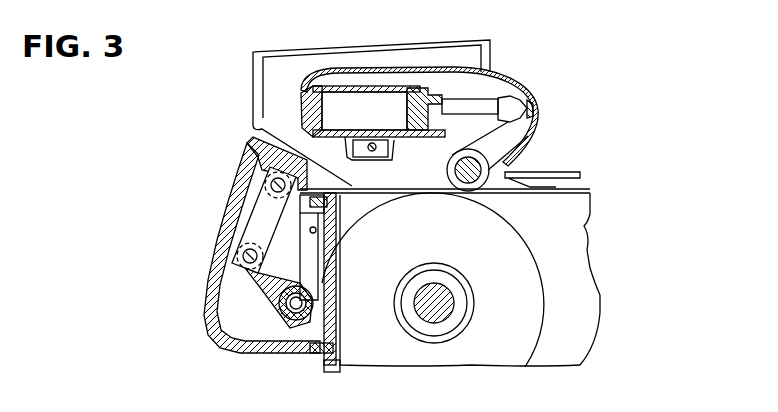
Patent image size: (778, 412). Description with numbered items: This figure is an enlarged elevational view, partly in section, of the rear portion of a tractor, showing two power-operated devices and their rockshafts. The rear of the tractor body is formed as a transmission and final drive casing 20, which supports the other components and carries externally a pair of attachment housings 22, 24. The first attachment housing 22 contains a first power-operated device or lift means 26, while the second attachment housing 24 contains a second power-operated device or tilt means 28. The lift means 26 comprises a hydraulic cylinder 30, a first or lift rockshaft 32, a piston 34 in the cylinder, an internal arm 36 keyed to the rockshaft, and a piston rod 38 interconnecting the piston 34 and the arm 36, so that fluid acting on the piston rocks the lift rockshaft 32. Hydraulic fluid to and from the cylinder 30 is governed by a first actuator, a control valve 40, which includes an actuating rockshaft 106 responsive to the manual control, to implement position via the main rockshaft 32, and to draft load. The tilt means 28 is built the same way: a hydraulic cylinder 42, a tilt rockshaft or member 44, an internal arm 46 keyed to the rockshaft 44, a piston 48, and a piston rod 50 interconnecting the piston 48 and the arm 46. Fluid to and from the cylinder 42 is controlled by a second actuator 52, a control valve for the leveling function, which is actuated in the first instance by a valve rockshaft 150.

The transmission and final drive casing 20 is at (577, 225).
The attachment housing 22 is at (538, 110).
The attachment housing 24 is at (256, 148).
The lift means 26 is at (536, 93).
The tilt means 28 is at (214, 215).
The hydraulic cylinder 30 is at (362, 100).
The lift rockshaft 32 is at (471, 184).
The piston 34 is at (413, 96).
The internal arm 36 is at (497, 148).
The piston rod 38 is at (483, 102).
The control valve 40 is at (386, 148).
The hydraulic cylinder 42 is at (252, 198).
The tilt rockshaft 44 is at (290, 320).
The internal arm 46 is at (252, 269).
The piston 48 is at (268, 172).
The piston rod 50 is at (253, 232).
The second actuator 52 is at (325, 249).
The actuating rockshaft 106 is at (374, 151).
The valve rockshaft 150 is at (316, 230).